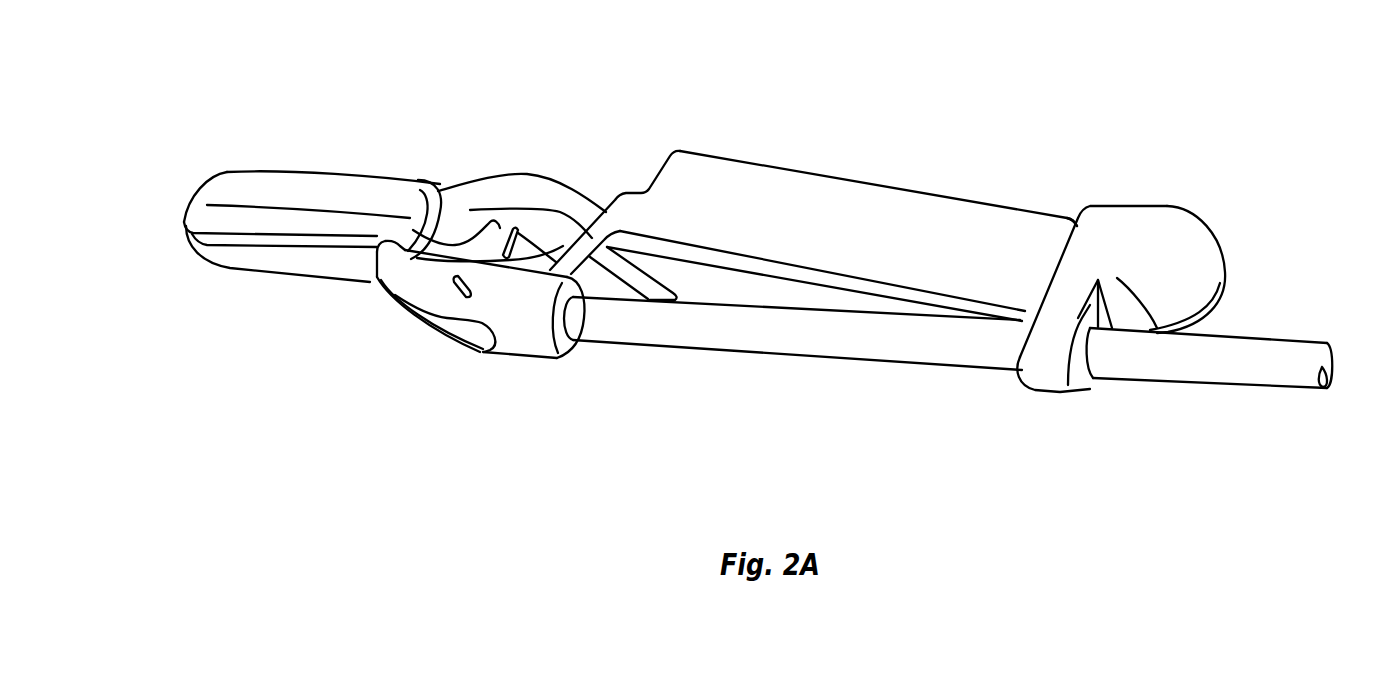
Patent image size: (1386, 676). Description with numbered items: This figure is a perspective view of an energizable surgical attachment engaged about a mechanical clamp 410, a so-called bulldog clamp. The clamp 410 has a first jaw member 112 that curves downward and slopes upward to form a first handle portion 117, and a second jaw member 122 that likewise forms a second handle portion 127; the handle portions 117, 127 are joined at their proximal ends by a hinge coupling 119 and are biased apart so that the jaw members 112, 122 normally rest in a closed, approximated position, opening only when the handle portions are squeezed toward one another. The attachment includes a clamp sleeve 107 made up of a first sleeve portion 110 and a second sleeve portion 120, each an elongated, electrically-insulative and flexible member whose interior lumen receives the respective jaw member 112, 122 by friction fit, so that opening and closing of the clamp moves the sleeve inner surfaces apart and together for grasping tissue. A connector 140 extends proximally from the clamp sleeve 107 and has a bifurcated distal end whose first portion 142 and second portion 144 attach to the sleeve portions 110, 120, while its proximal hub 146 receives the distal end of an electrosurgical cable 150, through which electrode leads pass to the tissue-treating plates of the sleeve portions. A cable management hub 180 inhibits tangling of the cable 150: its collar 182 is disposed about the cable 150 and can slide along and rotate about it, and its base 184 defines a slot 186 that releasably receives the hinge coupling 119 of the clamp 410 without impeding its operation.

The clamp sleeve 107 is at (287, 225).
The first sleeve portion 110 is at (270, 171).
The second sleeve portion 120 is at (258, 272).
The first jaw member 112 is at (463, 182).
The second jaw member 122 is at (504, 226).
The hinge coupling 119 is at (600, 173).
The second handle portion 127 is at (790, 170).
The mechanical clamp 410 is at (865, 158).
The first handle portion 117 is at (768, 293).
The electrosurgical cable 150 is at (855, 358).
The connector 140 is at (480, 339).
The first portion 142 is at (409, 281).
The second portion 144 is at (431, 330).
The proximal hub 146 is at (549, 358).
The cable management hub 180 is at (1161, 291).
The collar 182 is at (1063, 393).
The base 184 is at (1230, 283).
The slot 186 is at (1069, 218).